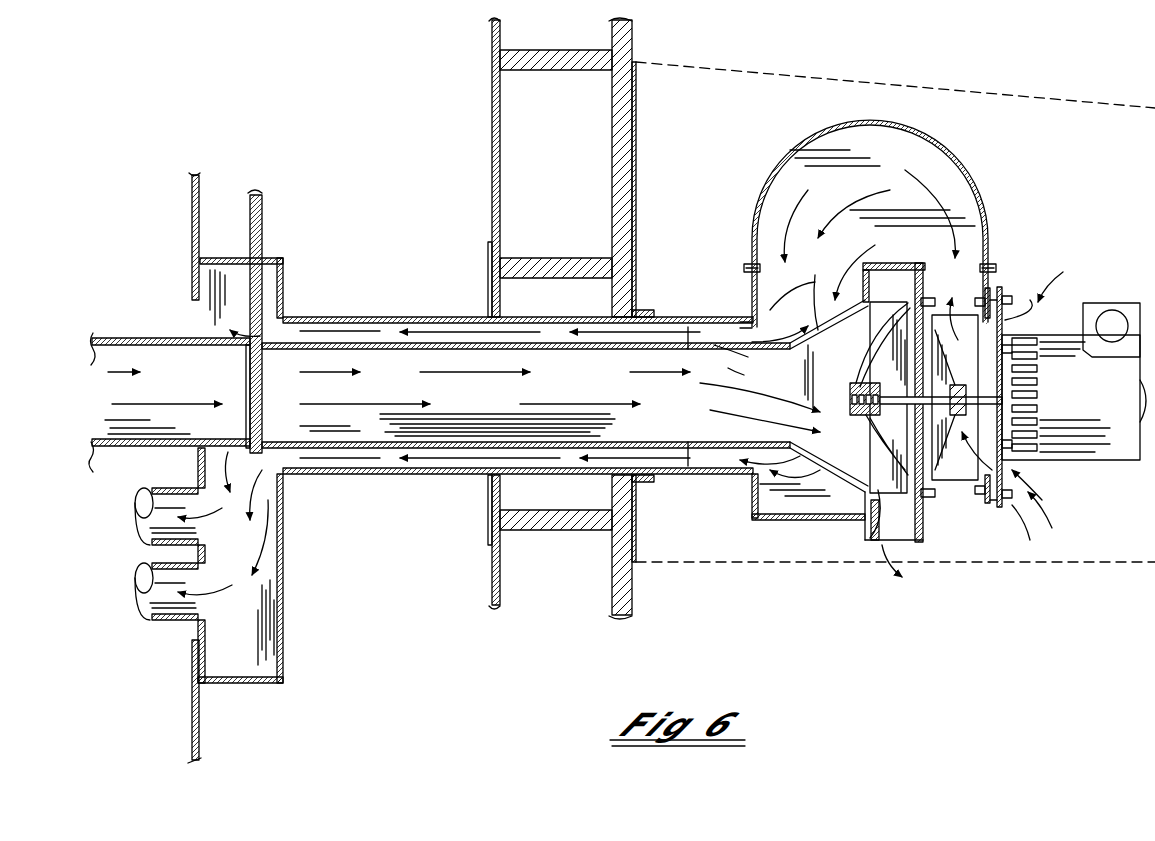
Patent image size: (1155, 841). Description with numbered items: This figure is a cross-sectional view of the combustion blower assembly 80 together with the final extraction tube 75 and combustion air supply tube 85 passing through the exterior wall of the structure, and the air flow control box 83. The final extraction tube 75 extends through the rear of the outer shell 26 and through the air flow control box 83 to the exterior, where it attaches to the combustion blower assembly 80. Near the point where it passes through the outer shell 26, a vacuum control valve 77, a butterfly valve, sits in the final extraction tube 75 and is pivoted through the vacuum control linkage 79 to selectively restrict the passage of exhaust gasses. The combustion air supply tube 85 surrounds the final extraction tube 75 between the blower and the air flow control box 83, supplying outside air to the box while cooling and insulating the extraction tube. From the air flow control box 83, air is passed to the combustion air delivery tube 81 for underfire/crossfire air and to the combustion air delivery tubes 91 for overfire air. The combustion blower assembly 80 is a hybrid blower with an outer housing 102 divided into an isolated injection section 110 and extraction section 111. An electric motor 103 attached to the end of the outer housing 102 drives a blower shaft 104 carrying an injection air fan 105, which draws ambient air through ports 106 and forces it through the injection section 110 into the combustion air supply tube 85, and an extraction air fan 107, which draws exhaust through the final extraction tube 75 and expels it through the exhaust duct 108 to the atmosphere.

The outer shell 26 is at (200, 190).
The final extraction tube 75 is at (128, 340).
The vacuum control valve 77 is at (250, 392).
The vacuum control linkage 79 is at (262, 215).
The combustion blower assembly 80 is at (748, 522).
The combustion air delivery tube 81 is at (142, 496).
The air flow control box 83 is at (284, 614).
The combustion air supply tube 85 is at (403, 318).
The combustion air delivery tubes 91 is at (158, 622).
The outer housing 102 is at (998, 506).
The electric motor 103 is at (1117, 462).
The blower shaft 104 is at (870, 448).
The injection air fan 105 is at (955, 335).
The ports 106 is at (1037, 312).
The extraction air fan 107 is at (864, 484).
The exhaust duct 108 is at (878, 545).
The injection section 110 is at (960, 197).
The extraction section 111 is at (839, 376).